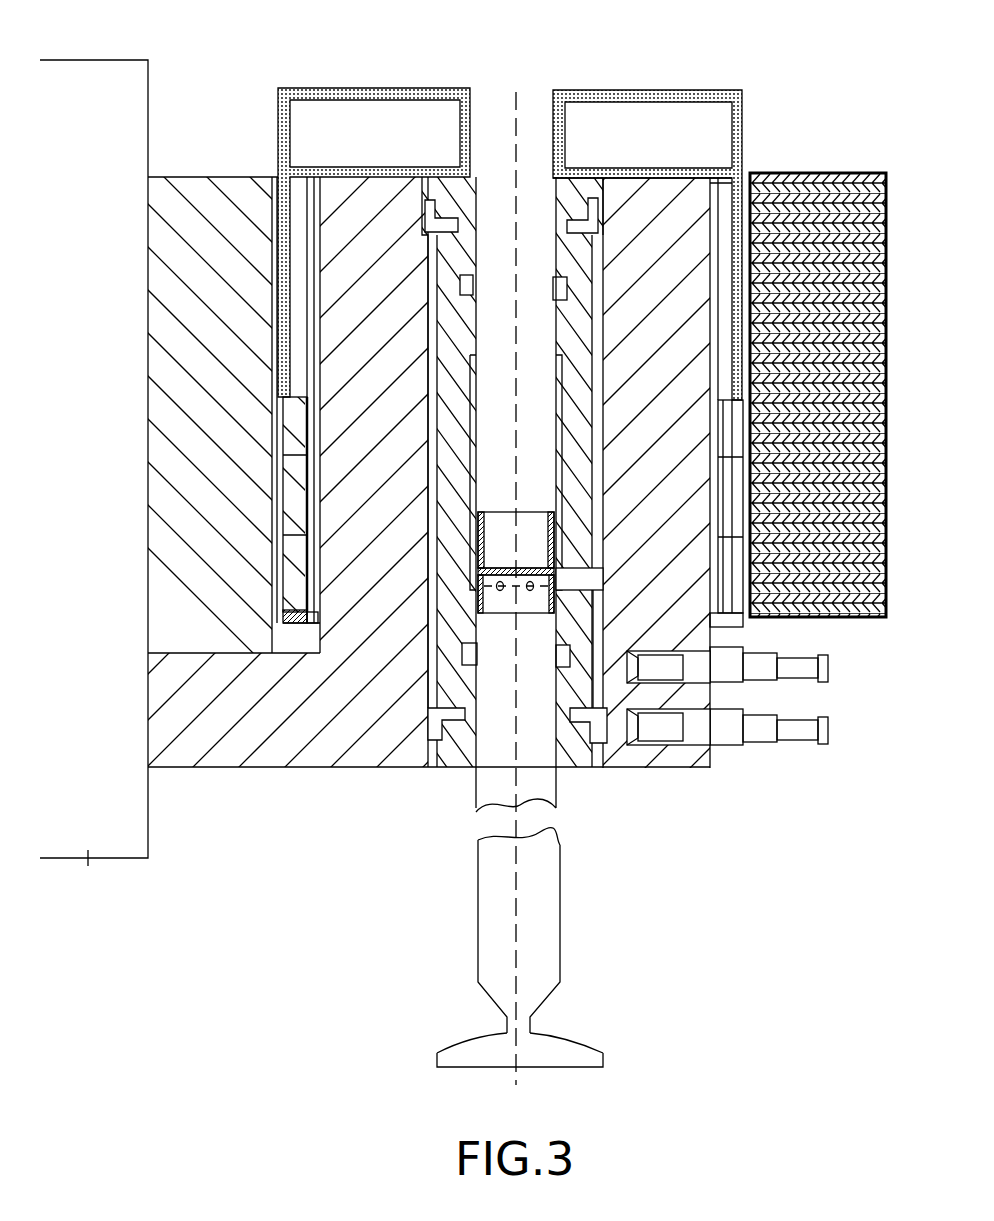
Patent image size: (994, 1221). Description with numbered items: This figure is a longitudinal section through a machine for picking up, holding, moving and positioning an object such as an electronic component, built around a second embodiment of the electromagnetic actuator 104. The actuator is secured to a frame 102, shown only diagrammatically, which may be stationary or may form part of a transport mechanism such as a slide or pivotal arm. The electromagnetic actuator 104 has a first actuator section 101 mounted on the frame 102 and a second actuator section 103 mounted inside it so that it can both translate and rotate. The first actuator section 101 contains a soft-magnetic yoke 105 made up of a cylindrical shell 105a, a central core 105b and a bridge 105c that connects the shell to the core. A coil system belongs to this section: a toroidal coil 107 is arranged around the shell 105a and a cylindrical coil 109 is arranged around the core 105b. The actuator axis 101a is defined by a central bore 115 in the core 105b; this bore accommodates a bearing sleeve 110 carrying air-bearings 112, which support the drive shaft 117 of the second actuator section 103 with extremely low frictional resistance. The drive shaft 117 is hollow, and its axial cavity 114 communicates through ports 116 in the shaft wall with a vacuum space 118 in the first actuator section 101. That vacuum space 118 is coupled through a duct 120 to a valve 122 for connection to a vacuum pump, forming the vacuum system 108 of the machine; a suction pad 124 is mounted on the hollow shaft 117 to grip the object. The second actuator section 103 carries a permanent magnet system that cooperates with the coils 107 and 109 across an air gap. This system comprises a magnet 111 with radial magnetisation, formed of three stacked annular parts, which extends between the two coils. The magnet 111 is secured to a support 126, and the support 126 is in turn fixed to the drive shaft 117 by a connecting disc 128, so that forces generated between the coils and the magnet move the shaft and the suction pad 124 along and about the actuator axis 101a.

The first actuator section 101 is at (368, 768).
The actuator axis 101a is at (520, 120).
The frame 102 is at (94, 488).
The second actuator section 103 is at (290, 400).
The electromagnetic actuator 104 is at (237, 798).
The soft-magnetic yoke 105 is at (205, 767).
The cylindrical shell 105a is at (835, 565).
The central core 105b is at (370, 205).
The bridge 105c is at (298, 767).
The toroidal coil 107 is at (742, 265).
The vacuum system 108 is at (448, 953).
The cylindrical coil 109 is at (732, 175).
The bearing sleeve 110 is at (580, 195).
The magnet 111 is at (730, 505).
The air-bearings 112 is at (508, 212).
The axial cavity 114 is at (490, 527).
The central bore 115 is at (432, 338).
The ports 116 is at (490, 590).
The drive shaft 117 is at (545, 785).
The vacuum space 118 is at (560, 385).
The duct 120 is at (613, 609).
The valve 122 is at (808, 675).
The suction pad 124 is at (578, 1052).
The support 126 is at (285, 220).
The connecting disc 128 is at (658, 98).